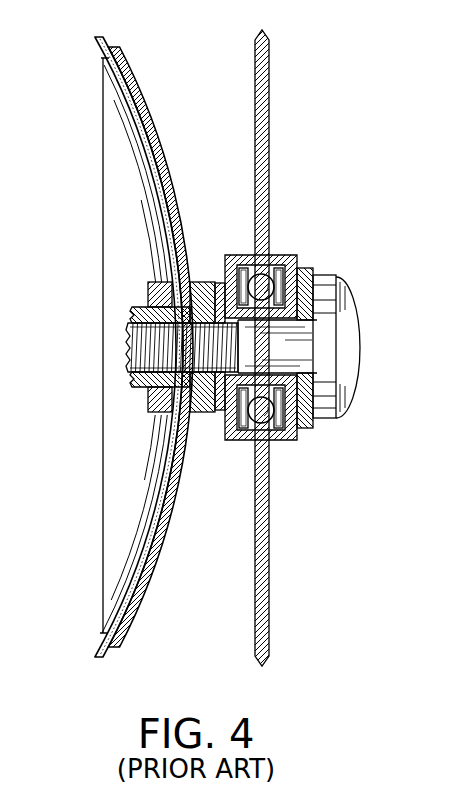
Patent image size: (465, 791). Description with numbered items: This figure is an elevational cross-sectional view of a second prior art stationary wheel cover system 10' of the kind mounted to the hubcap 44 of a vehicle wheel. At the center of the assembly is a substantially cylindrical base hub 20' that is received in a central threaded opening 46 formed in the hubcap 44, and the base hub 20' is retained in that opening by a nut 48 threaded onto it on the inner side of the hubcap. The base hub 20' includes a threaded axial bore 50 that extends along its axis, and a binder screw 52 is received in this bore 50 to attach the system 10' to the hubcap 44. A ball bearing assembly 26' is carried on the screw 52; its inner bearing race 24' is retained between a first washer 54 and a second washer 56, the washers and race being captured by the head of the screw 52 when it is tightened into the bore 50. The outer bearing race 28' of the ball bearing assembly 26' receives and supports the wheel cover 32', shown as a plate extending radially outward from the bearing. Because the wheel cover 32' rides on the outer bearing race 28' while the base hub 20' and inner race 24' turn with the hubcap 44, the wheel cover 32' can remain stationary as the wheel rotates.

The stationary wheel cover system 10' is at (392, 98).
The base hub 20' is at (199, 306).
The inner bearing race 24' is at (333, 375).
The ball bearing assembly 26' is at (336, 369).
The outer bearing race 28' is at (287, 383).
The wheel cover 32' is at (296, 348).
The hubcap 44 is at (152, 127).
The central threaded opening 46 is at (132, 318).
The nut 48 is at (148, 282).
The threaded axial bore 50 is at (140, 363).
The binder screw 52 is at (358, 312).
The first washer 54 is at (217, 282).
The second washer 56 is at (310, 268).